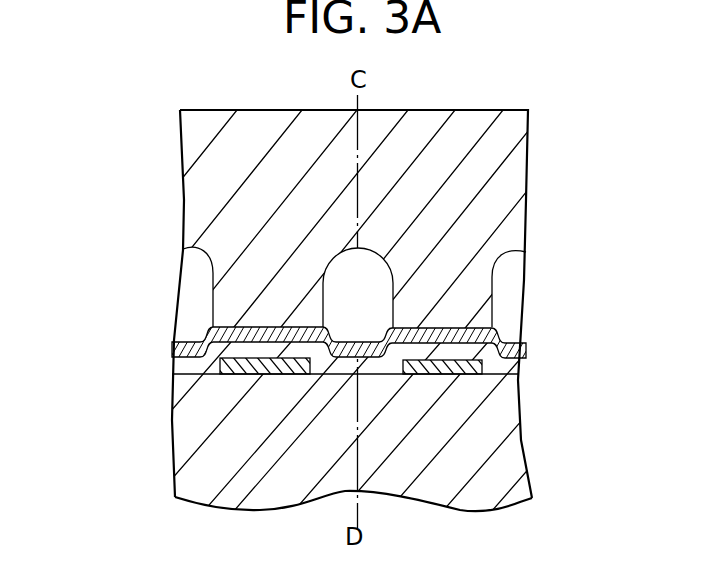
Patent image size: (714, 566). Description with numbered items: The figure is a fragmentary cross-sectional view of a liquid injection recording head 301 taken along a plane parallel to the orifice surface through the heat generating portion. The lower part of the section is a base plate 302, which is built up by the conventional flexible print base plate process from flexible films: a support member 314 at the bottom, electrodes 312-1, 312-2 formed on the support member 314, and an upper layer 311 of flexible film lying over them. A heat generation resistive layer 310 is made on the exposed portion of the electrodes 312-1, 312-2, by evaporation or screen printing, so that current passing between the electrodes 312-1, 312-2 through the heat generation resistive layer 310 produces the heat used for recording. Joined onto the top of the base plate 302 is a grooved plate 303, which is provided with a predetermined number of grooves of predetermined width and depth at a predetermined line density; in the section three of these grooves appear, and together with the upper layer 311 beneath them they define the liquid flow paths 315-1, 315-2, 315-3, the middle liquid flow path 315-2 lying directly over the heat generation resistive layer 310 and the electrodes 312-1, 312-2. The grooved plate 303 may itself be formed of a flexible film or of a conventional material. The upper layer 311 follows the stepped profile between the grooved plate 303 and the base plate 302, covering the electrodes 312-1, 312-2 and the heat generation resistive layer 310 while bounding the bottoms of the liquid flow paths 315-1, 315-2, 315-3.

The liquid injection recording head 301 is at (490, 110).
The base plate 302 is at (292, 440).
The grooved plate 303 is at (505, 148).
The heat generation resistive layer 310 is at (503, 368).
The upper layer 311 is at (517, 347).
The electrode 312-1 is at (245, 372).
The electrode 312-2 is at (443, 380).
The support member 314 is at (510, 464).
The liquid flow path 315-1 is at (200, 272).
The liquid flow path 315-2 is at (374, 262).
The liquid flow path 315-3 is at (510, 282).